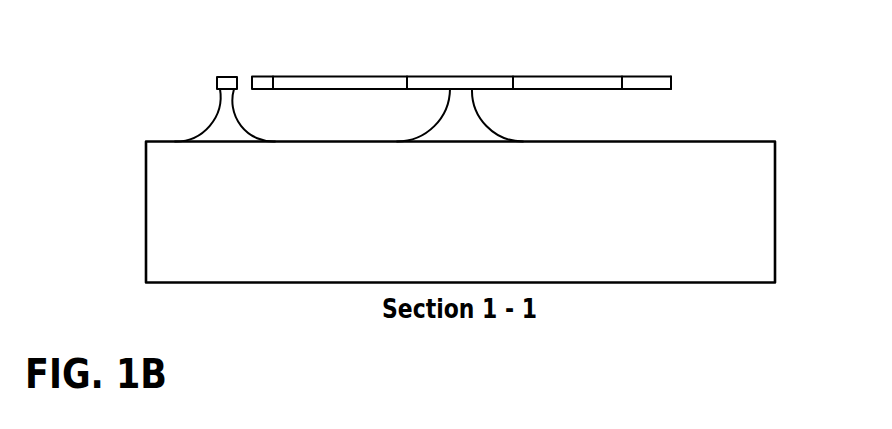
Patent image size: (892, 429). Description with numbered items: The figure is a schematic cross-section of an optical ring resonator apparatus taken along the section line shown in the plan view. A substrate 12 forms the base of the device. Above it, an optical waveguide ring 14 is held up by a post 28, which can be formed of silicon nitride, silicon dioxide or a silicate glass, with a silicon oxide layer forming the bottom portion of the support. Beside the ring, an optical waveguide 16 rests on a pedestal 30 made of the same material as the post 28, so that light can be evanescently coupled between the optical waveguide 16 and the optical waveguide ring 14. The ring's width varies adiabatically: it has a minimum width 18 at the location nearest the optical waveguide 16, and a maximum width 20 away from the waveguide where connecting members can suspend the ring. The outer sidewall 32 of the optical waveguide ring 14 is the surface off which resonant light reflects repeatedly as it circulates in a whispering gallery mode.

The substrate 12 is at (182, 248).
The optical waveguide ring 14 is at (364, 75).
The optical waveguide 16 is at (217, 79).
The minimum width 18 is at (249, 73).
The maximum width 20 is at (622, 73).
The post 28 is at (445, 115).
The pedestal 30 is at (210, 118).
The outer sidewall 32 is at (673, 80).